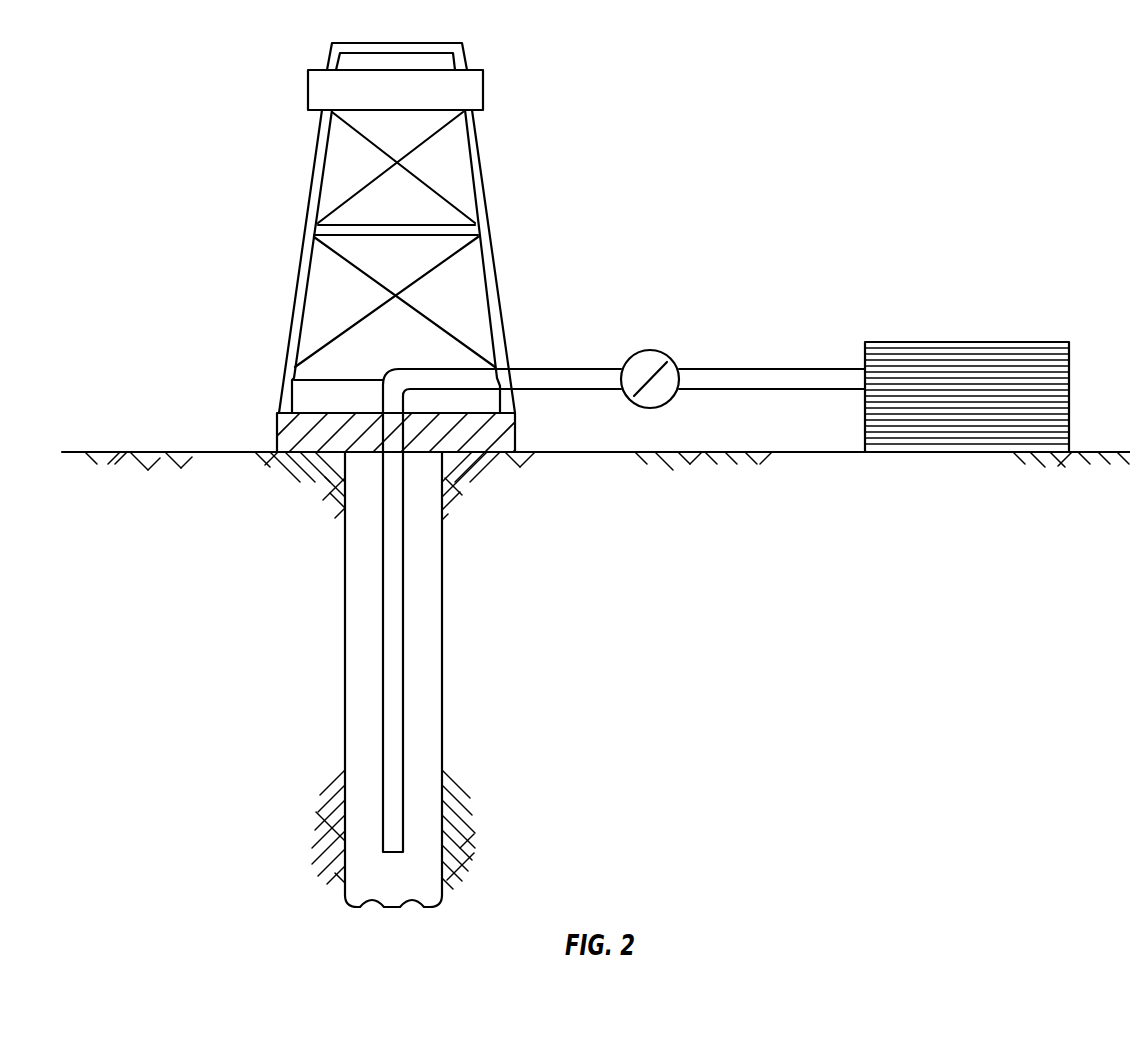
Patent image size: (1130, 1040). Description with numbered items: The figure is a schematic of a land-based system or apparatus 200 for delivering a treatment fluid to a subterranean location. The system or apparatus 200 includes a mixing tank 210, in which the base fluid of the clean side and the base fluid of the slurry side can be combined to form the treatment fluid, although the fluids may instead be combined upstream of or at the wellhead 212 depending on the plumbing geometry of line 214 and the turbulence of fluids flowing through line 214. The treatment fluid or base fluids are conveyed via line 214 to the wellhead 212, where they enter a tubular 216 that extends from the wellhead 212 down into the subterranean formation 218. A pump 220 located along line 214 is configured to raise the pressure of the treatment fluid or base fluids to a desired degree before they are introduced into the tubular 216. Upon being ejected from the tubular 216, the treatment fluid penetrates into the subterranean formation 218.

The system or apparatus 200 is at (291, 70).
The mixing tank 210 is at (968, 342).
The wellhead 212 is at (277, 438).
The line 214 is at (568, 368).
The tubular 216 is at (403, 625).
The subterranean formation 218 is at (170, 620).
The pump 220 is at (654, 350).